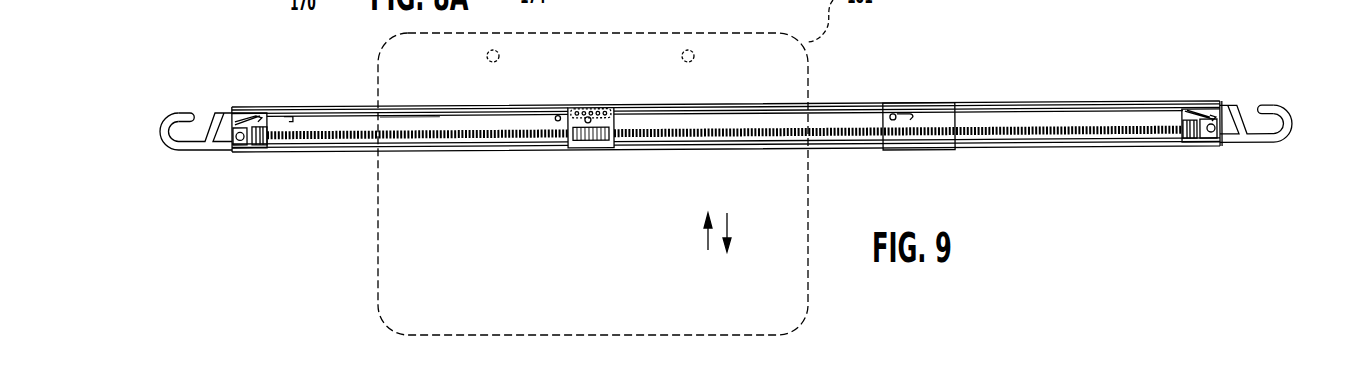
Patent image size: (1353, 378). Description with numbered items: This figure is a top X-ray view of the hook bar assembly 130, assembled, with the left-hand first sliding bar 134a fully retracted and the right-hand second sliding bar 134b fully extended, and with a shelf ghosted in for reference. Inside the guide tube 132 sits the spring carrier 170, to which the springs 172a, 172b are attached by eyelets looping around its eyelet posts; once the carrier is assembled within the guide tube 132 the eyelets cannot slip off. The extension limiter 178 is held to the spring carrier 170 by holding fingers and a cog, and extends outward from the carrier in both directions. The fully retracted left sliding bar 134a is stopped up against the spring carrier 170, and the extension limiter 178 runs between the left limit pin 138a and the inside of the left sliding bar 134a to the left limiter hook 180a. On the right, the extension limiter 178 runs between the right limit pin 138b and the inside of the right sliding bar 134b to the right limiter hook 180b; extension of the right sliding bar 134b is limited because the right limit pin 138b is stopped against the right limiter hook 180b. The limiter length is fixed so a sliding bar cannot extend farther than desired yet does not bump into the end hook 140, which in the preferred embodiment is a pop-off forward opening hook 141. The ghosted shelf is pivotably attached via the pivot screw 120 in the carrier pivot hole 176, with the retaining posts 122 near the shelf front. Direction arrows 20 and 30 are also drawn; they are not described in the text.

The first direction 20 is at (707, 250).
The second direction 30 is at (729, 222).
The pivot screw 120 is at (617, 121).
The retaining posts 122 is at (498, 52).
The hook bar assembly 130 is at (410, 167).
The guide tube 132 is at (830, 150).
The first sliding bar 134a is at (308, 145).
The second sliding bar 134b is at (1100, 143).
The left limit pin 138a is at (557, 121).
The right limit pin 138b is at (893, 121).
The end hook 140 is at (212, 108).
The forward opening hooks 141 is at (172, 101).
The spring carrier 170 is at (593, 144).
The spring 172a is at (305, 124).
The spring 172b is at (1050, 130).
The carrier pivot hole 176 is at (573, 112).
The extension limiter 178 is at (397, 120).
The left limiter hook 180a is at (286, 118).
The right limiter hook 180b is at (897, 116).